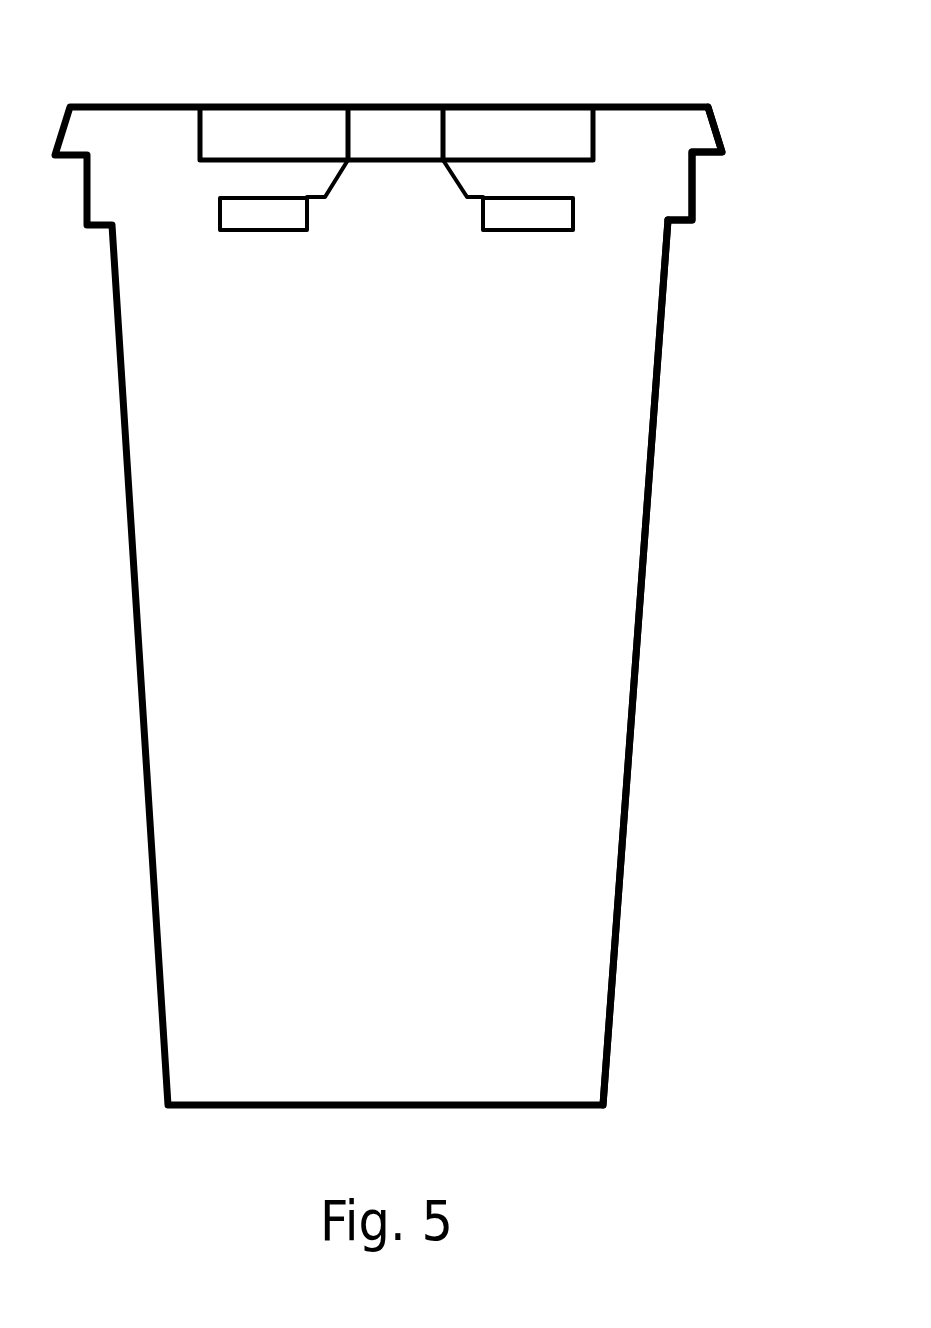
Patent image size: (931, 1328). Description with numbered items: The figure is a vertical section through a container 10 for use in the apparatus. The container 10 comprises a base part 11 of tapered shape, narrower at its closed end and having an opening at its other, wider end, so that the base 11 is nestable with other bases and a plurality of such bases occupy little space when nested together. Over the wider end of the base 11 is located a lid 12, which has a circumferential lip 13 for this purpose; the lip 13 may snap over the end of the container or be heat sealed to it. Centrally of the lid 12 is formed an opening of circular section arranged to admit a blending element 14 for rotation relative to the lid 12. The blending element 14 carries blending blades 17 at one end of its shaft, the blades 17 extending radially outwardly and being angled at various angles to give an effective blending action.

The container 10 is at (672, 741).
The base part 11 is at (648, 543).
The lid 12 is at (371, 74).
The circumferential lip 13 is at (718, 130).
The blending element 14 is at (483, 262).
The blending blades 17 is at (278, 232).